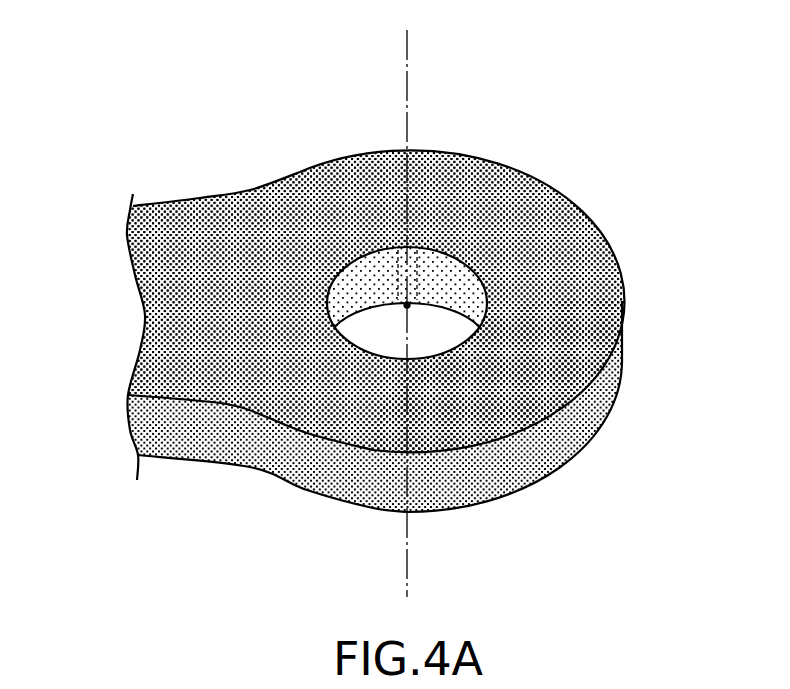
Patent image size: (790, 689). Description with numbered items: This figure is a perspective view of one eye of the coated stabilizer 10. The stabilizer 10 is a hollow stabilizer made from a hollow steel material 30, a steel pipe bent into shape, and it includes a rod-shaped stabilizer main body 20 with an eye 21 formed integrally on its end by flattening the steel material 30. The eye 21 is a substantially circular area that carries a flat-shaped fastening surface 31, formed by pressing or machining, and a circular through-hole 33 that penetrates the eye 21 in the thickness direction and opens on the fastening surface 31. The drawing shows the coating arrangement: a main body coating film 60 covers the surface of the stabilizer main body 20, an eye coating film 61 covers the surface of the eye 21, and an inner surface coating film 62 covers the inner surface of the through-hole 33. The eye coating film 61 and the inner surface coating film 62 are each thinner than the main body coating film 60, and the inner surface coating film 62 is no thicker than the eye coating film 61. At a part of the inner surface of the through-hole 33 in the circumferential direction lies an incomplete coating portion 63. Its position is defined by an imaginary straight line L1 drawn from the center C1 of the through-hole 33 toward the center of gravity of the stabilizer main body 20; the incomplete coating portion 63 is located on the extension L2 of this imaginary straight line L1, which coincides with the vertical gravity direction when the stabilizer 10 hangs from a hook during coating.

The stabilizer 10 is at (528, 72).
The stabilizer main body 20 is at (163, 457).
The eye 21 is at (595, 437).
The steel material 30 is at (147, 318).
The fastening surface 31 is at (335, 170).
The through-hole 33 is at (437, 352).
The main body coating film 60 is at (186, 240).
The eye coating film 61 is at (570, 298).
The inner surface coating film 62 is at (470, 292).
The incomplete coating portion 63 is at (418, 287).
The center of the through-hole C1 is at (403, 307).
The imaginary straight line L1 is at (407, 570).
The extension L2 is at (407, 90).